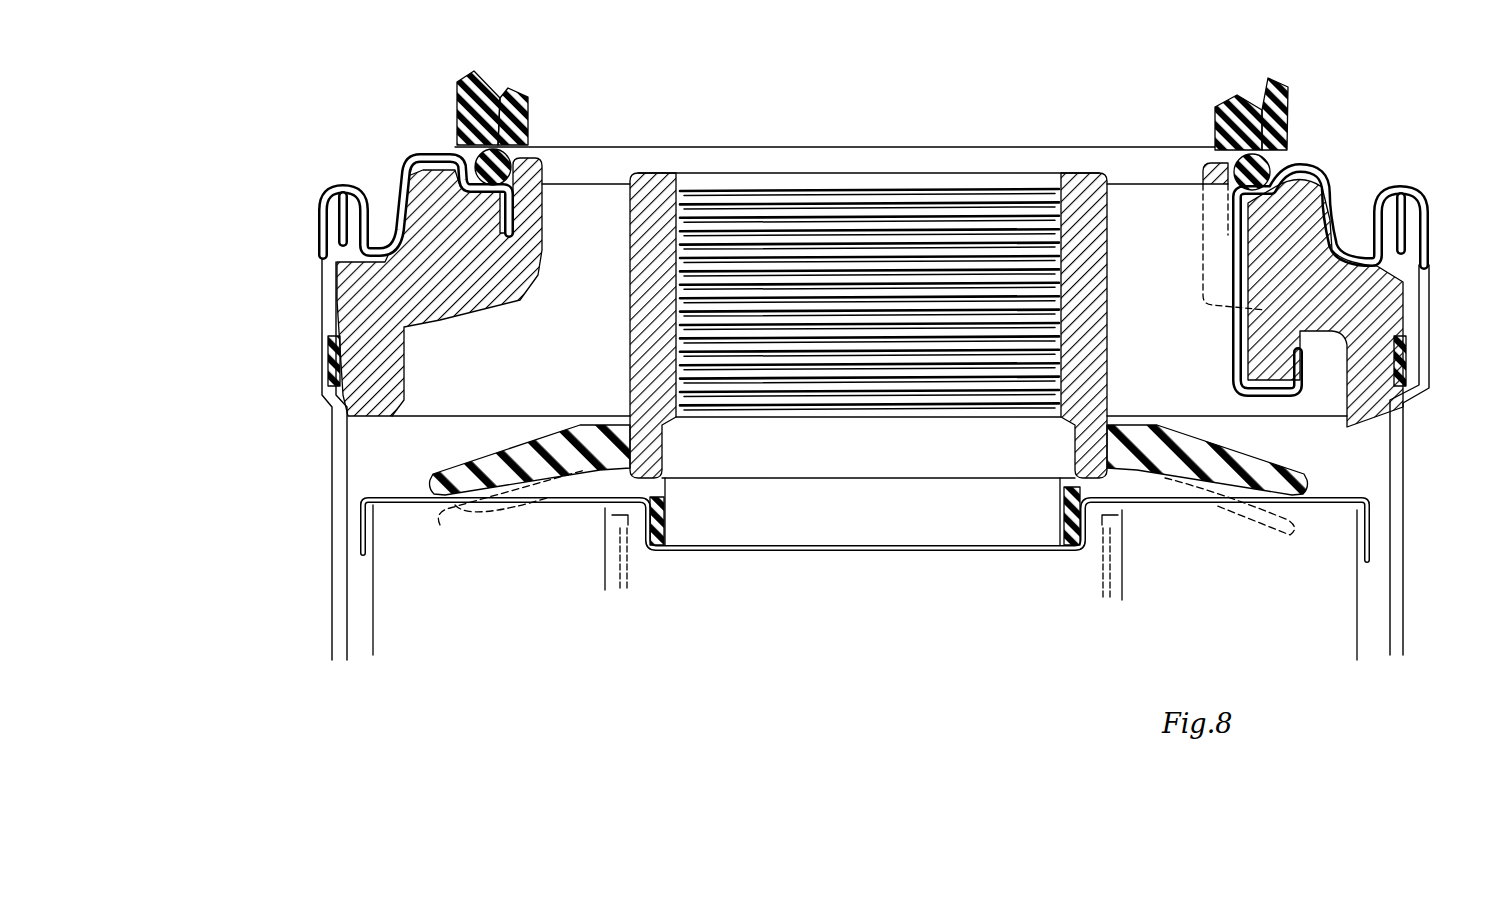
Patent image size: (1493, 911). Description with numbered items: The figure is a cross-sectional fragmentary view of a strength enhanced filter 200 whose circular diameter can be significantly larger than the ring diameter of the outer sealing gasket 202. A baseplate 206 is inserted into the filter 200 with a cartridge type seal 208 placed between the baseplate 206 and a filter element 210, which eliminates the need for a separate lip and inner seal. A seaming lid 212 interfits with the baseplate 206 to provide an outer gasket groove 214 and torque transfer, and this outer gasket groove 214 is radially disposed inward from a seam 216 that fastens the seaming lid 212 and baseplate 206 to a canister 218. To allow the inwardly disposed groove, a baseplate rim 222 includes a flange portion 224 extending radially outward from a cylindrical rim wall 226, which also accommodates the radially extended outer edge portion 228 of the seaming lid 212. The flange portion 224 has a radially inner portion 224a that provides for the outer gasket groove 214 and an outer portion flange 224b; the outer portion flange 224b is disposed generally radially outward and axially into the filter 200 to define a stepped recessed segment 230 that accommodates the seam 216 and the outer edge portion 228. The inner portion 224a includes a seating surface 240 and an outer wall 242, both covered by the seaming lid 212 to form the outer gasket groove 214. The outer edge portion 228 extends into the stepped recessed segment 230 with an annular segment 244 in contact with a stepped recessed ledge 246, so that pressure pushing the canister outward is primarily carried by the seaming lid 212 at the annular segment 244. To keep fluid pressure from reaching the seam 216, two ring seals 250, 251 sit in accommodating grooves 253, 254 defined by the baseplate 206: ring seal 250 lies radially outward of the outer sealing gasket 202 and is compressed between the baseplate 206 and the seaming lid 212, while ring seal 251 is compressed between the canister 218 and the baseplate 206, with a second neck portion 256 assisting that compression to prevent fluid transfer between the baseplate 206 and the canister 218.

The filter 200 is at (240, 467).
The outer sealing gasket 202 is at (502, 150).
The baseplate 206 is at (968, 575).
The cartridge type seal 208 is at (602, 462).
The filter element 210 is at (650, 572).
The seaming lid 212 is at (446, 158).
The outer gasket groove 214 is at (496, 128).
The seam 216 is at (290, 236).
The canister 218 is at (330, 603).
The baseplate rim 222 is at (470, 255).
The flange portion 224 is at (433, 288).
The radially inner portion 224a is at (517, 292).
The outer portion flange 224b is at (378, 344).
The cylindrical rim wall 226 is at (530, 216).
The radially extended outer edge portion 228 is at (404, 218).
The stepped recessed segment 230 is at (340, 168).
The seating surface 240 is at (1236, 262).
The outer wall 242 is at (1300, 178).
The annular segment 244 is at (372, 263).
The stepped recessed ledge 246 is at (333, 346).
The ring seal 250 is at (1280, 317).
The ring seal 251 is at (1408, 362).
The groove 253 is at (1310, 212).
The groove 254 is at (1340, 372).
The second neck portion 256 is at (1412, 408).